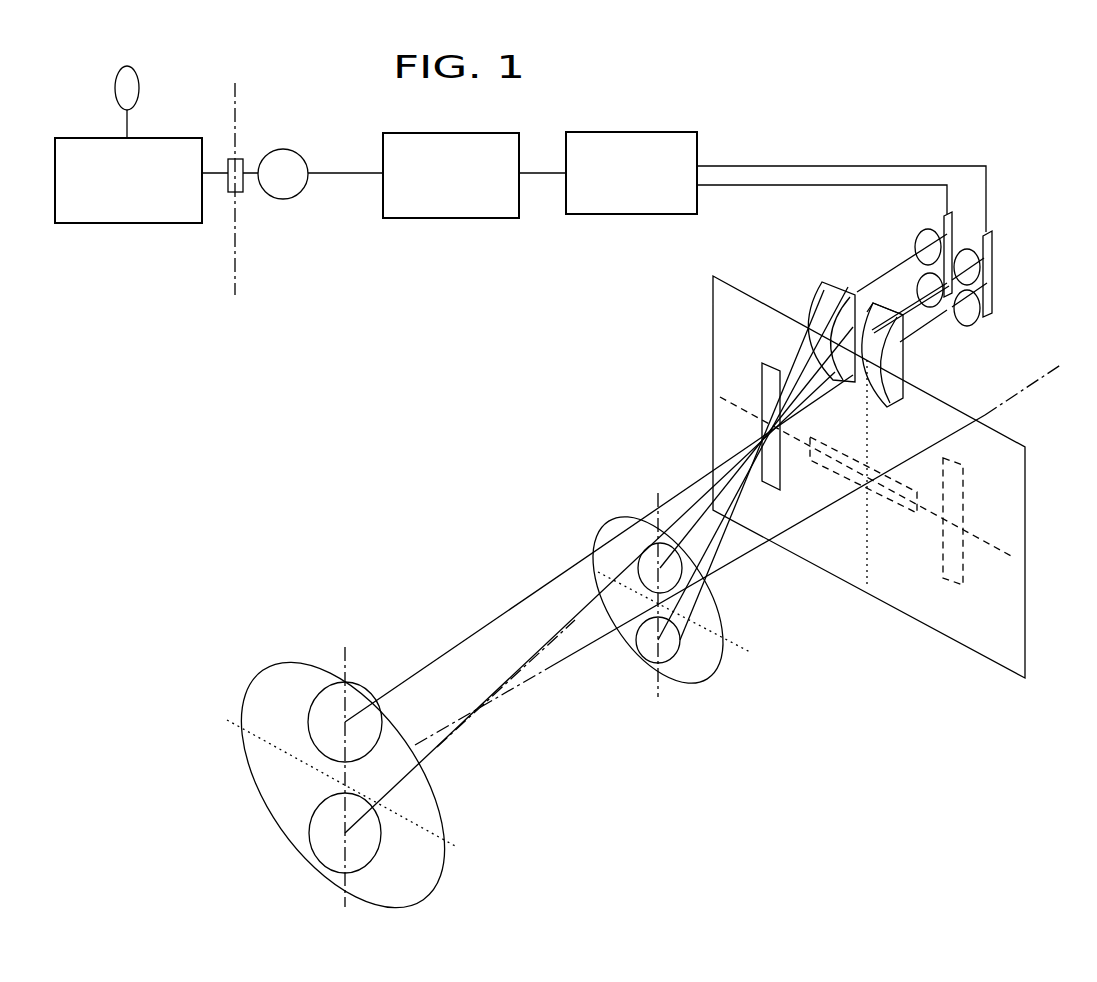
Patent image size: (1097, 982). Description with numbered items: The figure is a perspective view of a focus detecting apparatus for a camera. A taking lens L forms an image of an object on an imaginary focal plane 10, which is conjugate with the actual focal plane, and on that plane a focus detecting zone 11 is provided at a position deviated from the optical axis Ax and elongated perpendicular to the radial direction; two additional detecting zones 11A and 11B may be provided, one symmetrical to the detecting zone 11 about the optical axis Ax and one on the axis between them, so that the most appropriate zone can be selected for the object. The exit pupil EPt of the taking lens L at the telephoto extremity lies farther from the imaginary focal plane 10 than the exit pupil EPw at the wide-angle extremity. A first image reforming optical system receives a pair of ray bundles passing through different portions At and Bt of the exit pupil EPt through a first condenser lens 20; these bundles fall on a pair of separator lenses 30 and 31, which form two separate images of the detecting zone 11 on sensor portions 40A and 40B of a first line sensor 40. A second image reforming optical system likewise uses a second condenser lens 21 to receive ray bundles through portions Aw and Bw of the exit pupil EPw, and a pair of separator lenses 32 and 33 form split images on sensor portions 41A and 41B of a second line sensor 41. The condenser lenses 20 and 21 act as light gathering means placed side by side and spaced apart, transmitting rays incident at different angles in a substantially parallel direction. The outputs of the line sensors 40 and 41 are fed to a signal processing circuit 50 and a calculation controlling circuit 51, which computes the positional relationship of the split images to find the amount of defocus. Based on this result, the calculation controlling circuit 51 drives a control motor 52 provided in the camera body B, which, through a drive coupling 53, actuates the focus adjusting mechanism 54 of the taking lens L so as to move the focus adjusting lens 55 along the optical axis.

The imaginary focal plane 10 is at (715, 359).
The focus detecting zone 11 is at (760, 384).
The additional detecting zone 11A is at (946, 585).
The additional detecting zone 11B is at (840, 467).
The first condenser lens 20 is at (907, 370).
The second condenser lens 21 is at (818, 283).
The separator lens 30 is at (997, 283).
The separator lens 31 is at (982, 322).
The separator lens 32 is at (921, 233).
The separator lens 33 is at (917, 288).
The first line sensor 40 is at (998, 237).
The sensor portion 40A is at (997, 302).
The sensor portion 40B is at (997, 248).
The second line sensor 41 is at (960, 217).
The sensor portion 41A is at (947, 278).
The sensor portion 41B is at (947, 217).
The signal processing circuit 50 is at (640, 214).
The calculation controlling circuit 51 is at (475, 218).
The control motor 52 is at (287, 199).
The drive coupling 53 is at (243, 160).
The focus adjusting mechanism 54 is at (155, 223).
The focus adjusting lens 55 is at (139, 92).
The taking lens L is at (207, 263).
The camera body B is at (262, 263).
The optical axis Ax is at (557, 670).
The portion of exit pupil At is at (352, 695).
The portion of exit pupil Bt is at (327, 845).
The exit pupil at telephoto extremity EPt is at (447, 813).
The portion of exit pupil Aw is at (628, 517).
The portion of exit pupil Bw is at (648, 652).
The exit pupil at wide angle extremity EPw is at (687, 678).